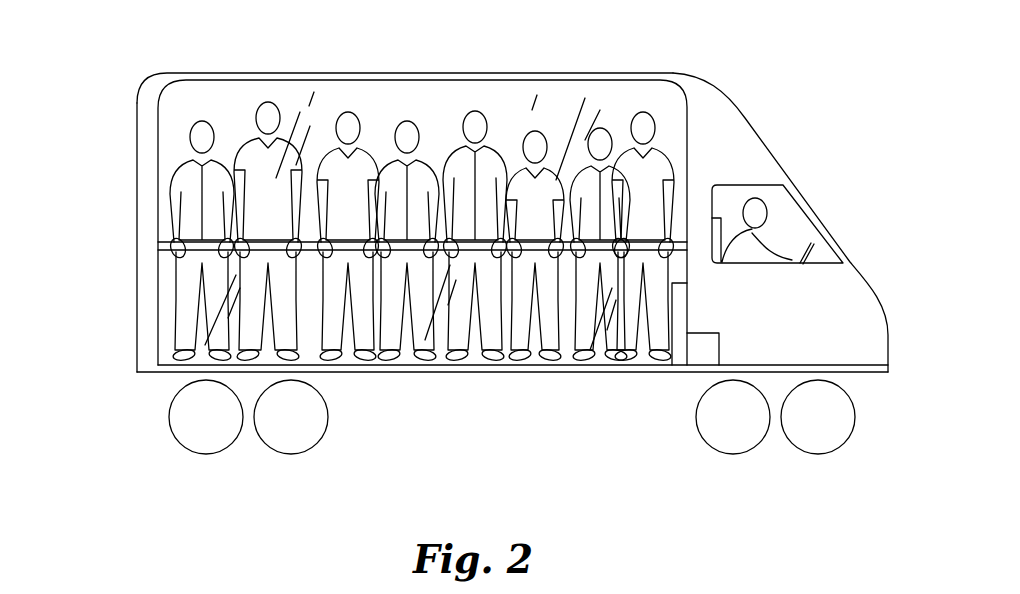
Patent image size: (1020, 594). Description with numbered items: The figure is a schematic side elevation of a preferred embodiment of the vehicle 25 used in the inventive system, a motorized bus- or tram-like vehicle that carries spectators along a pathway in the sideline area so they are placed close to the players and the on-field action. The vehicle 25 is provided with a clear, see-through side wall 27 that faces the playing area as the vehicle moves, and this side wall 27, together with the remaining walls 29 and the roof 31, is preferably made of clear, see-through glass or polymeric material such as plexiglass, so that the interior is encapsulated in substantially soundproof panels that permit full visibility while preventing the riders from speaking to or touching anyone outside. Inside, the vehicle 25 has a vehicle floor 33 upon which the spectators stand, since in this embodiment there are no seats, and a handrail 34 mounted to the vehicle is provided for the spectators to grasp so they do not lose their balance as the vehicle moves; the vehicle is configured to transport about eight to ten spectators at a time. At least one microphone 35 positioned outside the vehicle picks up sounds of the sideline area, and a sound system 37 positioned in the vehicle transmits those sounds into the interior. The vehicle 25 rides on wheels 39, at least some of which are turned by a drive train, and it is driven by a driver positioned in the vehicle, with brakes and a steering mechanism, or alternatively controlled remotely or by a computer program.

The vehicle 25 is at (738, 96).
The side wall 27 is at (219, 117).
The remaining walls 29 is at (137, 193).
The roof 31 is at (422, 73).
The vehicle floor 33 is at (447, 358).
The handrail 34 is at (178, 247).
The microphone 35 is at (707, 354).
The sound system 37 is at (677, 320).
The wheels 39 is at (207, 438).